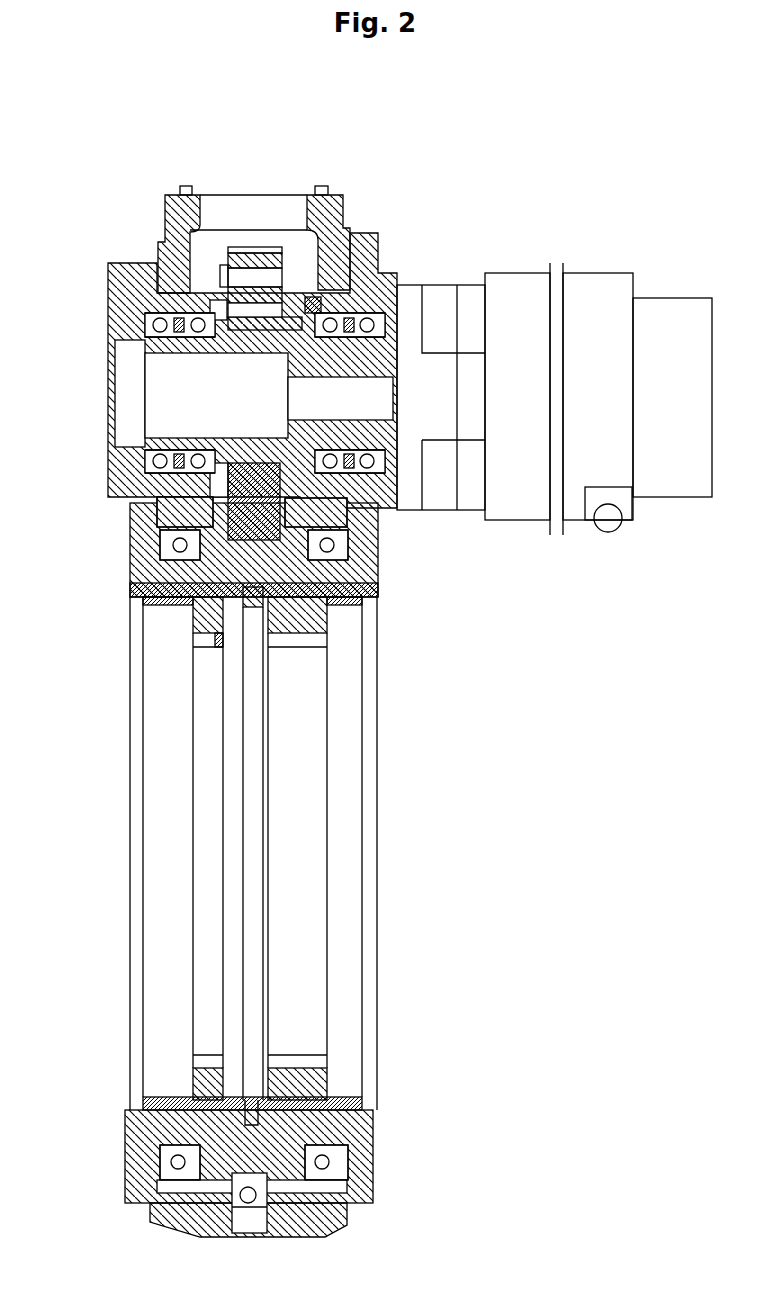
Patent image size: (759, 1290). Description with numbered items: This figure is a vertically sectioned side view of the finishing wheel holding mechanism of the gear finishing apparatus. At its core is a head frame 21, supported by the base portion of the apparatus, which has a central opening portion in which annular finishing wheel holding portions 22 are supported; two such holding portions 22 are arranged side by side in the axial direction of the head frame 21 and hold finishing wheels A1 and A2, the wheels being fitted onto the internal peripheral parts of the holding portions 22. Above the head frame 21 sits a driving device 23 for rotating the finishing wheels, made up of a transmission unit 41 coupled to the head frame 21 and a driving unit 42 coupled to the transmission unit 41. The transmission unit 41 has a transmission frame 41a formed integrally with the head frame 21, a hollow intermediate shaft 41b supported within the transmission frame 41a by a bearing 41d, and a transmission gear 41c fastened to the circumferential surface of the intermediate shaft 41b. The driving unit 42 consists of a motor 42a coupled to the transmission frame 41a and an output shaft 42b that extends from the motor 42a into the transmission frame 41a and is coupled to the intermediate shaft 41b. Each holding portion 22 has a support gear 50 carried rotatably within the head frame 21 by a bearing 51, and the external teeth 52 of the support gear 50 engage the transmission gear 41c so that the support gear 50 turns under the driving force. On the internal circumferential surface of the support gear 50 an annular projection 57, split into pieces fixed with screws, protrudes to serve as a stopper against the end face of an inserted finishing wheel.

The head frame 21 is at (121, 583).
The finishing wheel holding portion 22 is at (170, 513).
The driving device 23 is at (593, 152).
The transmission unit 41 is at (298, 123).
The transmission frame 41a is at (195, 213).
The intermediate shaft 41b is at (300, 262).
The transmission gear 41c is at (280, 337).
The bearing 41d is at (380, 268).
The driving unit 42 is at (625, 190).
The motor 42a is at (590, 290).
The output shaft 42b is at (378, 397).
The support gear 50 is at (278, 628).
The bearing 51 is at (378, 555).
The external teeth 52 is at (297, 625).
The annular projection 57 is at (250, 587).
The finishing wheel A1 is at (312, 851).
The finishing wheel A2 is at (168, 850).